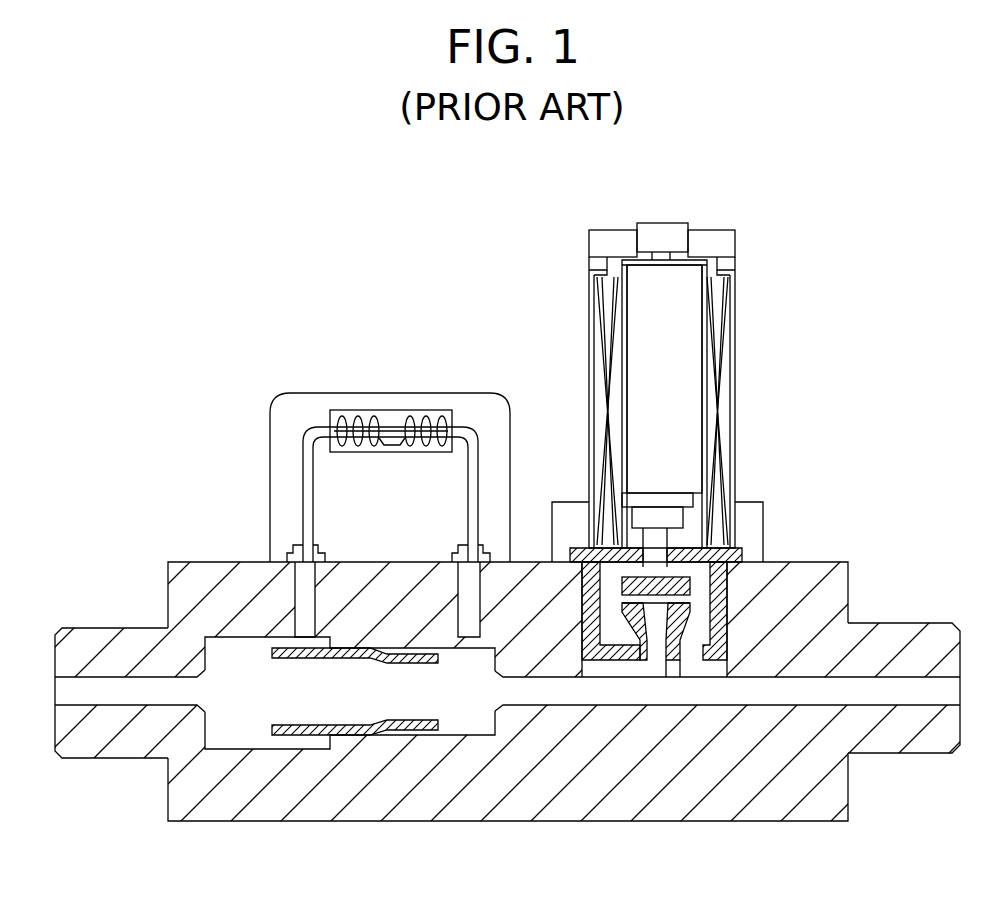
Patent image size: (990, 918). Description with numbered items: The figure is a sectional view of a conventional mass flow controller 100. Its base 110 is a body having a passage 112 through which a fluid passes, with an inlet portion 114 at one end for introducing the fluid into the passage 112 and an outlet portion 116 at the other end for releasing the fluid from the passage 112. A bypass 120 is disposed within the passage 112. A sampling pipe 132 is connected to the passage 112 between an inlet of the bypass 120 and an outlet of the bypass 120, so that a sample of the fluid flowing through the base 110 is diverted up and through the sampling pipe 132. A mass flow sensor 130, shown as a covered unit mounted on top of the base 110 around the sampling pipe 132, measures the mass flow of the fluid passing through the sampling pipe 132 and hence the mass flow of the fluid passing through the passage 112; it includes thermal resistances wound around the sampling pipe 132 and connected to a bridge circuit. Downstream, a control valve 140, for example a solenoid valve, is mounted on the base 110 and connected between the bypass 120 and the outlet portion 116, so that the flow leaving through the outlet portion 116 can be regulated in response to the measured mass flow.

The conventional mass flow controller 100 is at (852, 249).
The base 110 is at (840, 580).
The passage 112 is at (571, 700).
The inlet portion 114 is at (123, 753).
The outlet portion 116 is at (887, 747).
The bypass 120 is at (348, 728).
The mass flow sensor 130 is at (366, 387).
The sampling pipe 132 is at (304, 492).
The control valve 140 is at (743, 373).